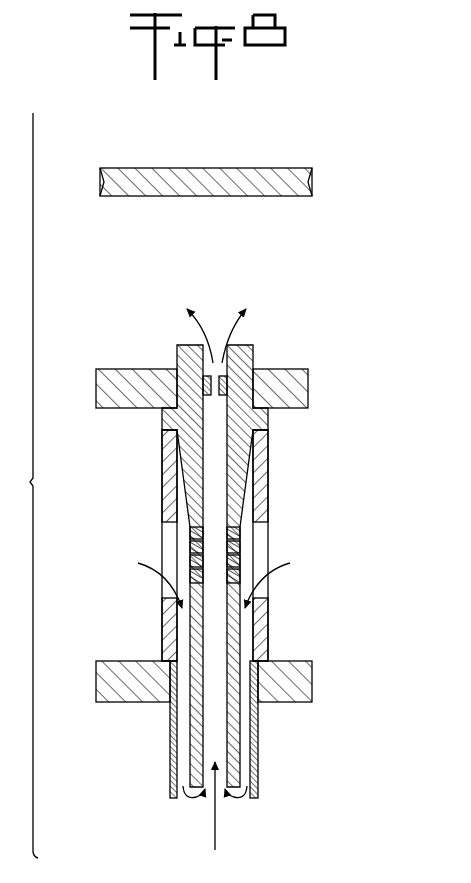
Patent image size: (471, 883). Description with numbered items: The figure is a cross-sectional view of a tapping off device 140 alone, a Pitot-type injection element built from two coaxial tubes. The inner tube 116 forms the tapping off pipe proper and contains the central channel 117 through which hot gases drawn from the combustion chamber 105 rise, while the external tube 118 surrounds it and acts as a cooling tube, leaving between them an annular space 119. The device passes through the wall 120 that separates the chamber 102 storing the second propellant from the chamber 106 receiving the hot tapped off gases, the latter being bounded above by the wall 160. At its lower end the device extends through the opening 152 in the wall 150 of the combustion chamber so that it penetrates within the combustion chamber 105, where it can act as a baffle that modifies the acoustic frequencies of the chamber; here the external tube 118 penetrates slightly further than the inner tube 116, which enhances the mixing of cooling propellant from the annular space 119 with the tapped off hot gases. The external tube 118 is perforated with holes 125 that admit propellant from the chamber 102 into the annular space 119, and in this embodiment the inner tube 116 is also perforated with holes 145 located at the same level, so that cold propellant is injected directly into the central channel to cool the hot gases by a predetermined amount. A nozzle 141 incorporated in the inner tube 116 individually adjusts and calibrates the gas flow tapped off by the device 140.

The wall 160 is at (218, 170).
The chamber receiving the hot tapped off gases 106 is at (194, 240).
The wall 120 is at (122, 368).
The chamber storing the second propellant 102 is at (199, 387).
The inner tube 116 is at (287, 550).
The nozzle 141 is at (240, 415).
The central channel 117 is at (192, 490).
The holes 125 is at (203, 527).
The holes 145 is at (130, 545).
The tapping off device 140 is at (138, 595).
The external tube 118 is at (162, 640).
The combustion chamber 105 is at (208, 712).
The wall of the combustion chamber 150 is at (297, 702).
The opening 152 is at (258, 703).
The annular space 119 is at (172, 775).